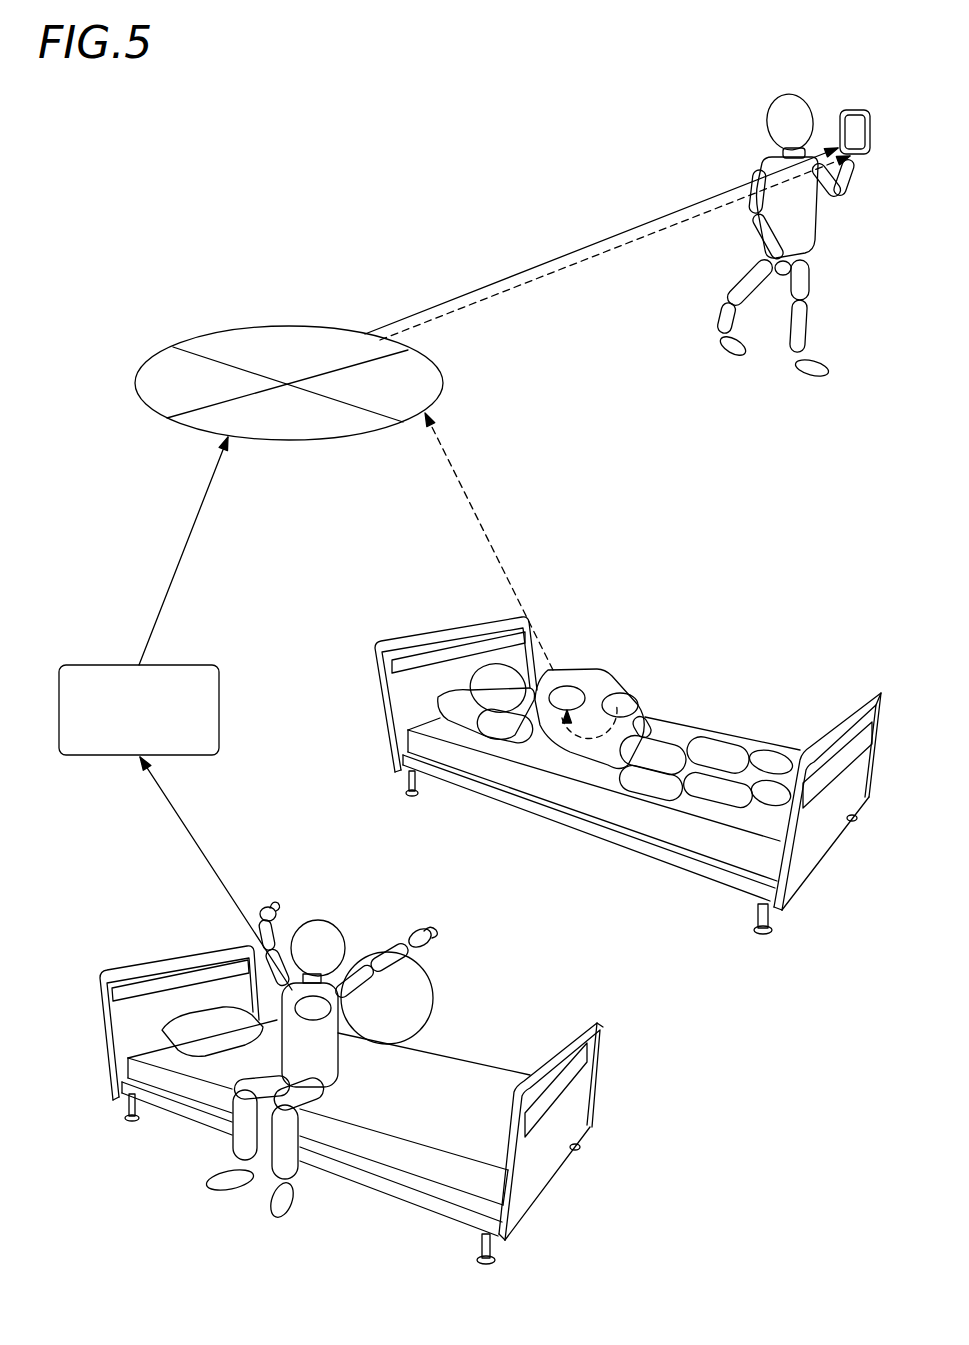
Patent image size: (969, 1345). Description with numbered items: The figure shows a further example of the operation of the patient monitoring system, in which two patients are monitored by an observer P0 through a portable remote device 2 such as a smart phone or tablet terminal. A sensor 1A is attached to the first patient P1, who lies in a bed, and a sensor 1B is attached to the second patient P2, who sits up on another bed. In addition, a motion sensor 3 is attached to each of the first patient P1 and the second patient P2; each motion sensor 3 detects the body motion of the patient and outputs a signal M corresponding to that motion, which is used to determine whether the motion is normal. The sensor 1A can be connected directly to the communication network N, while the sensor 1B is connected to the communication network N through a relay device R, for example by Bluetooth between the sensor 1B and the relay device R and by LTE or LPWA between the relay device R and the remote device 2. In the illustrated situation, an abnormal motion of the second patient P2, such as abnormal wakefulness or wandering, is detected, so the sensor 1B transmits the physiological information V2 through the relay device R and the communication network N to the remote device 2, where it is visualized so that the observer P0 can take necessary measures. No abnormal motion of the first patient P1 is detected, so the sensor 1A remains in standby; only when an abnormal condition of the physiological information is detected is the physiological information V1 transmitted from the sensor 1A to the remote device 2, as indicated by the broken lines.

The remote device 2 is at (850, 110).
The observer P0 is at (777, 121).
The physiological information V2 is at (560, 257).
The physiological information V1 is at (610, 247).
The communication network N is at (277, 327).
The relay device R is at (219, 708).
The first patient P1 is at (493, 673).
The sensor 1A is at (567, 688).
The motion sensor 3 is at (623, 697).
The signal M is at (572, 742).
The second patient P2 is at (318, 922).
The sensor 1B is at (325, 1030).